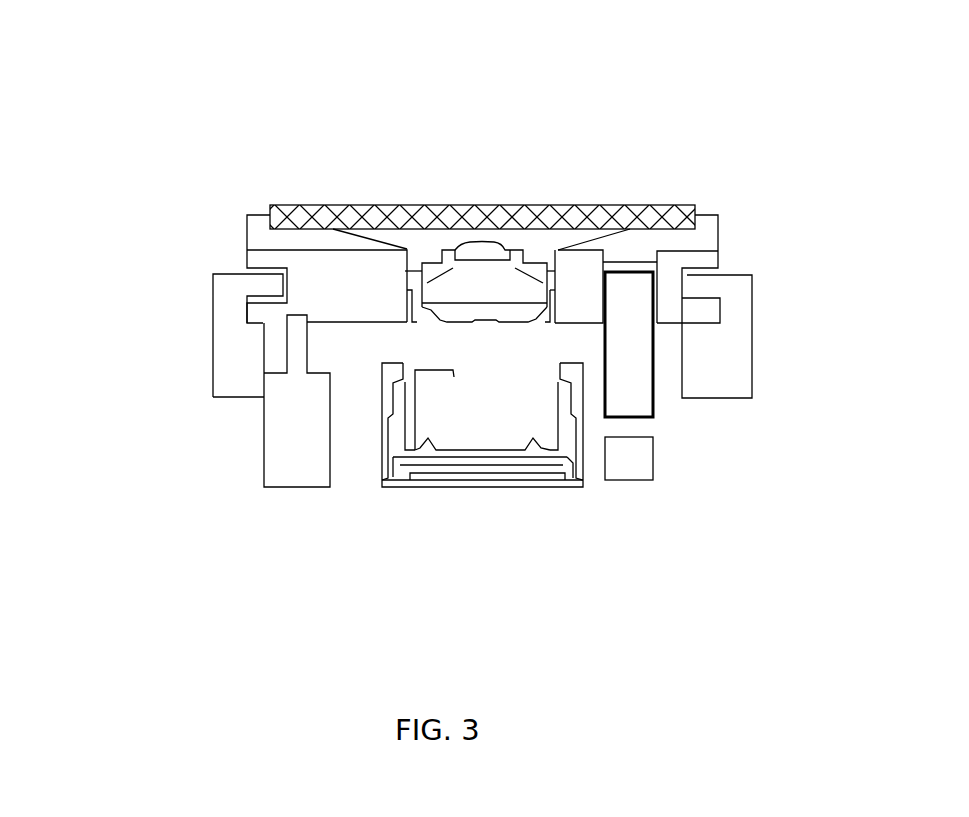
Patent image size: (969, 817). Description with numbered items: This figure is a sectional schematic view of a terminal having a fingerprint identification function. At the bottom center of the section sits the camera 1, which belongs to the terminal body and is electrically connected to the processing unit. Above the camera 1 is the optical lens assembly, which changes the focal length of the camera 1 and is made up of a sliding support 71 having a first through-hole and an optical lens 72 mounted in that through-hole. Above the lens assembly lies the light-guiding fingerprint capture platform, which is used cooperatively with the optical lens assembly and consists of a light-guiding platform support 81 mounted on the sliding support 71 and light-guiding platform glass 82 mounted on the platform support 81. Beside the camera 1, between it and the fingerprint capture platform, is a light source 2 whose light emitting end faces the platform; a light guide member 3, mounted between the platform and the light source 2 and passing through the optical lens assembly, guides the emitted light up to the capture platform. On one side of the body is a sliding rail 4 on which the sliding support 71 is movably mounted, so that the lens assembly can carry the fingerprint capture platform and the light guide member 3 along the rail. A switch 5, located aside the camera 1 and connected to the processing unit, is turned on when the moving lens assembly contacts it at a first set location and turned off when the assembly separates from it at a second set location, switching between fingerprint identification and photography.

The camera 1 is at (482, 488).
The light source 2 is at (727, 527).
The light guide member 3 is at (722, 351).
The sliding rail 4 is at (175, 357).
The switch 5 is at (245, 467).
The sliding support 71 is at (678, 302).
The optical lens 72 is at (546, 170).
The light-guiding platform support 81 is at (379, 178).
The light-guiding platform glass 82 is at (487, 122).